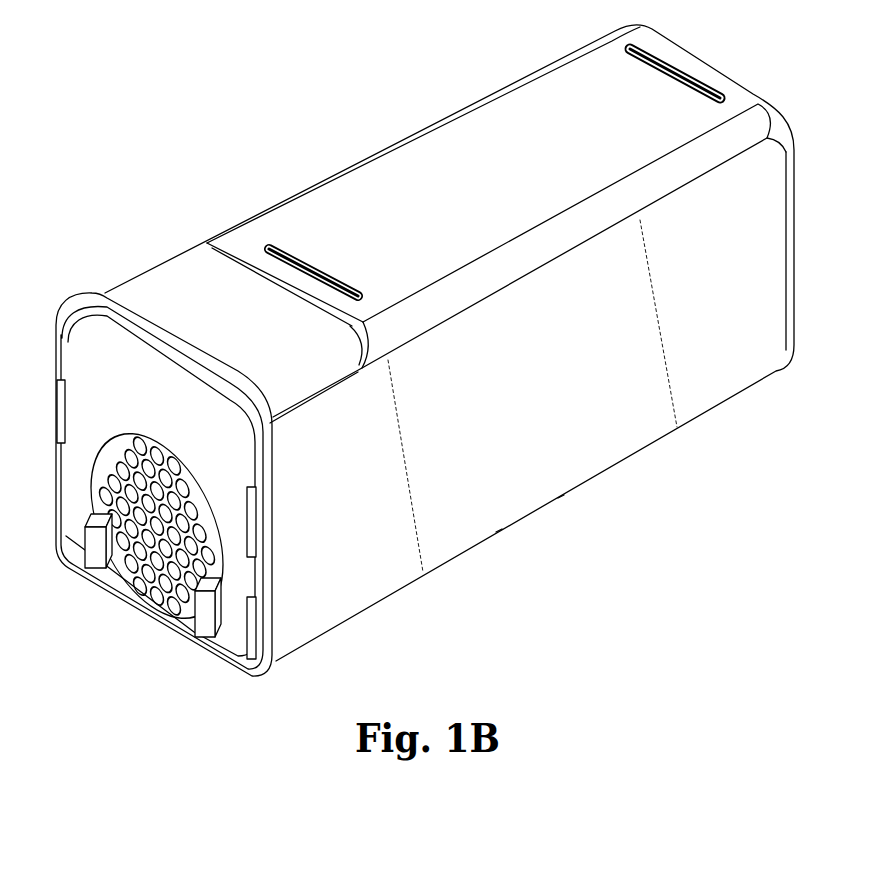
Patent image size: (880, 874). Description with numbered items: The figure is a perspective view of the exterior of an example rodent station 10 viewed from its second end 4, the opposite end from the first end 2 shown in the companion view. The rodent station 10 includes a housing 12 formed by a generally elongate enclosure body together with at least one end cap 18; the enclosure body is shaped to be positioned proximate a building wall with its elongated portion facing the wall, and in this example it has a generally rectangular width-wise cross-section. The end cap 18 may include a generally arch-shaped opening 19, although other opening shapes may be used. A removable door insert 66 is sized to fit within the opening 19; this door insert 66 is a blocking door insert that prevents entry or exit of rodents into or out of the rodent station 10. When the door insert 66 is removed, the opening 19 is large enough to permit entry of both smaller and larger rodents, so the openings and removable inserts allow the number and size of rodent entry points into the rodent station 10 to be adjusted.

The rodent station 10 is at (403, 363).
The first end 2 is at (760, 78).
The housing 12 is at (167, 261).
The end cap 18 is at (109, 345).
The opening 19 is at (117, 503).
The door insert 66 is at (100, 483).
The second end 4 is at (142, 474).